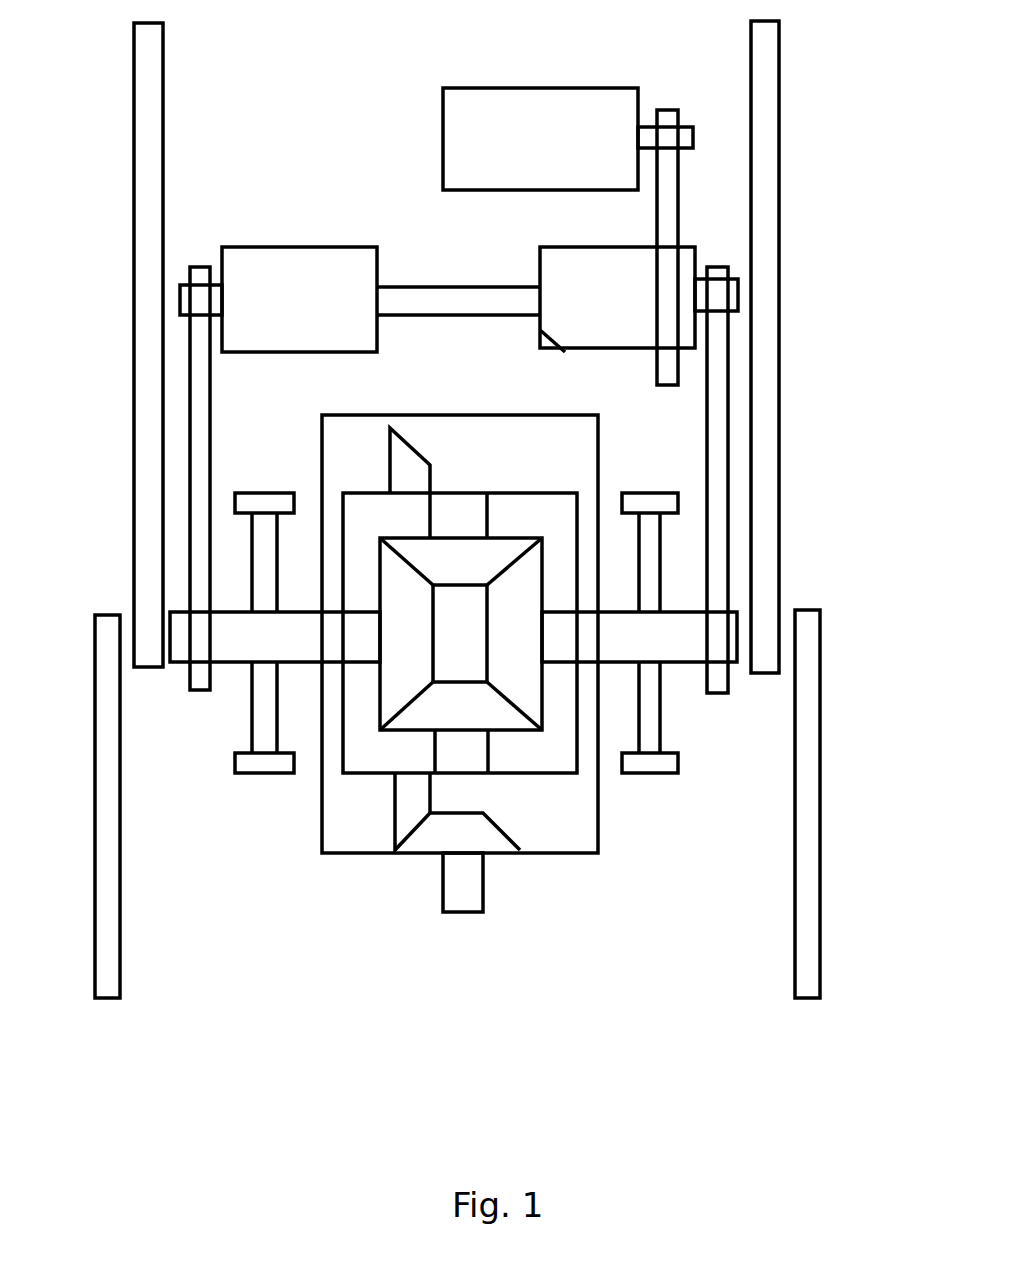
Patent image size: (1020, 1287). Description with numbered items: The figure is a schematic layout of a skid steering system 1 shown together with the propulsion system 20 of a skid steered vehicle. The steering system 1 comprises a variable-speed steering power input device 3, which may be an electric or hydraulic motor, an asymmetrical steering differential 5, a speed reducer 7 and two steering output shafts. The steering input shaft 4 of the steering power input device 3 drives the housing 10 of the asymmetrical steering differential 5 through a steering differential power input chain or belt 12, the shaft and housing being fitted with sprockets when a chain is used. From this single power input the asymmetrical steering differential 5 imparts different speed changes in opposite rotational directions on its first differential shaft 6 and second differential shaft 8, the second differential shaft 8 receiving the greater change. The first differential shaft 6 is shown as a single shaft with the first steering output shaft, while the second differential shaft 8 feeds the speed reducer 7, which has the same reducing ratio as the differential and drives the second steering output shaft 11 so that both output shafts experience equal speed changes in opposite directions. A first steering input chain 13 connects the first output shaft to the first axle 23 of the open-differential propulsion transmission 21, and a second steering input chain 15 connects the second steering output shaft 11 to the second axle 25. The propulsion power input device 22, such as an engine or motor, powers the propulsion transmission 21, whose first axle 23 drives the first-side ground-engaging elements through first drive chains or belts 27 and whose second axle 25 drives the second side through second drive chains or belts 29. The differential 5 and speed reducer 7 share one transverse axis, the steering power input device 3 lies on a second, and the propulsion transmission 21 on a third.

The skid steering system 1 is at (338, 130).
The variable-speed steering power input device 3 is at (533, 110).
The steering input shaft 4 is at (690, 132).
The asymmetrical steering differential 5 is at (620, 310).
The first differential shaft 6 is at (738, 295).
The speed reducer 7 is at (263, 327).
The second differential shaft 8 is at (470, 300).
The housing 10 is at (565, 355).
The second steering output shaft 11 is at (188, 300).
The steering differential power input chain or belt 12 is at (667, 188).
The first steering input chain 13 is at (715, 398).
The second steering input chain 15 is at (200, 418).
The propulsion system 20 is at (600, 880).
The open-differential propulsion transmission 21 is at (345, 853).
The propulsion power input device 22 is at (465, 885).
The first axle 23 is at (675, 650).
The second axle 25 is at (230, 645).
The first drive chains or belts 27 is at (765, 445).
The second drive chains or belts 29 is at (148, 405).